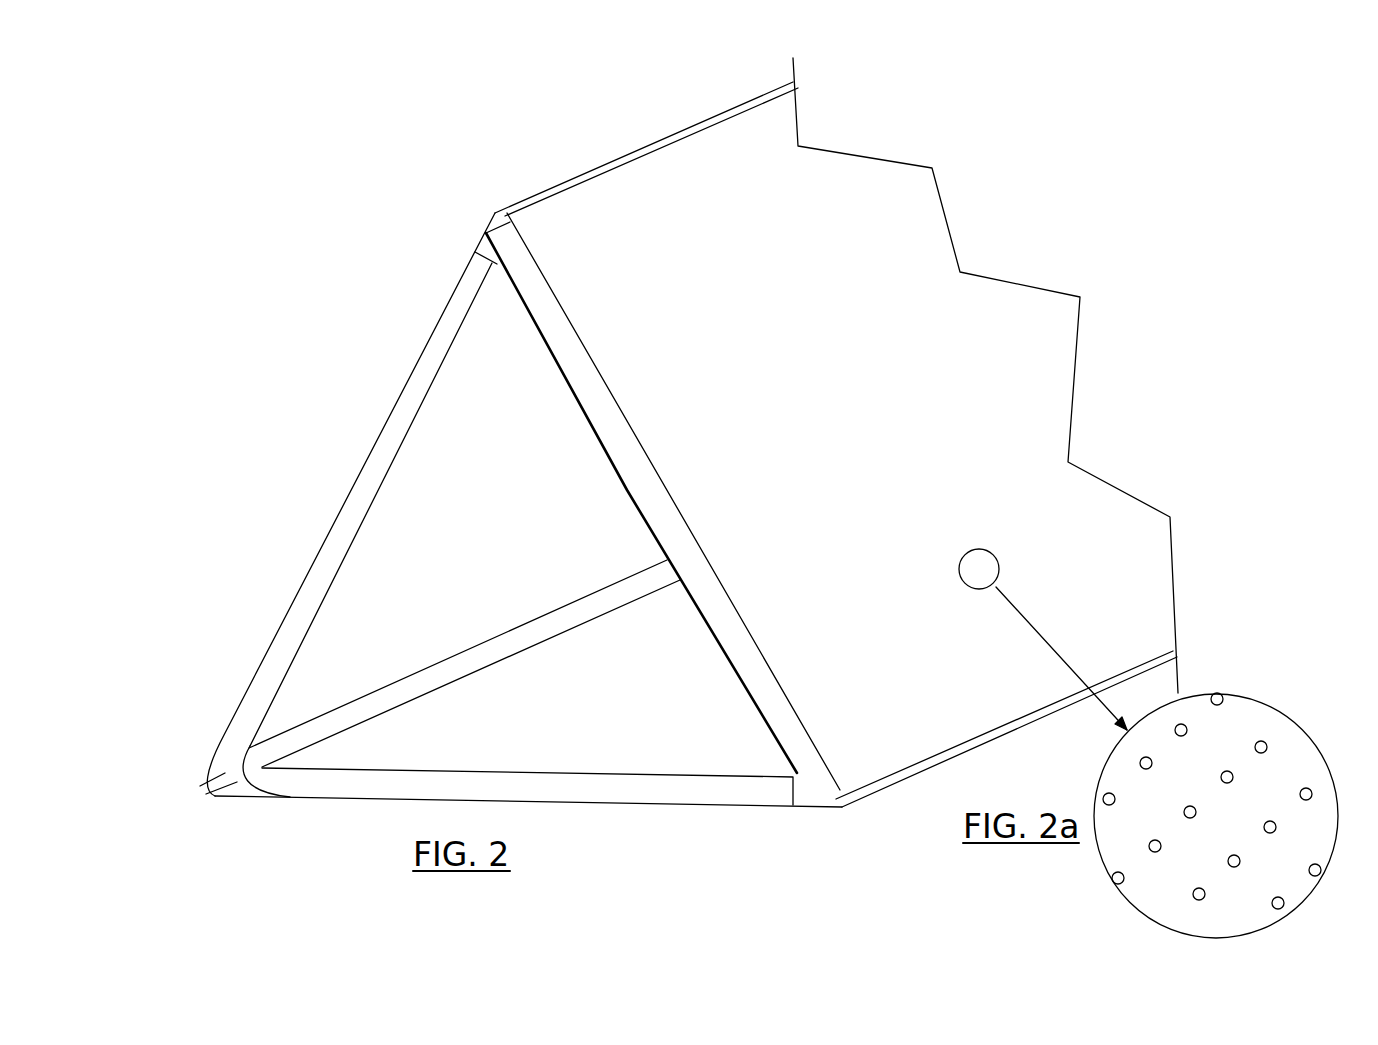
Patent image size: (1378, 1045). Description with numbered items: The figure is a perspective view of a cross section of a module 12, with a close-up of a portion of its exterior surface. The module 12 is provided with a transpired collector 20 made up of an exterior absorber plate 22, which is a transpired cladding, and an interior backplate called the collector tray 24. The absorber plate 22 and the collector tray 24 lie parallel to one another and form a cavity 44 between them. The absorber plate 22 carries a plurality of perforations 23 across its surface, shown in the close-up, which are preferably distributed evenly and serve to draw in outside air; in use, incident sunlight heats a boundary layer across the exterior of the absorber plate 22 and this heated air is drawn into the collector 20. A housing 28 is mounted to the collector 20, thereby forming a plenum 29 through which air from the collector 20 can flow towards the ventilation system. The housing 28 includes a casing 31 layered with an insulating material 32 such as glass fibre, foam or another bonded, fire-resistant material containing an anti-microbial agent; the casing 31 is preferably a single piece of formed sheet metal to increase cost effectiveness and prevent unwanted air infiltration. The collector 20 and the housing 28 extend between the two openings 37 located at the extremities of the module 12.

In FIG. 2, the module 12 is at (485, 147).
In FIG. 2, the transpired collector 20 is at (1031, 432).
In FIG. 2, the absorber plate 22 is at (868, 243).
In FIG. 2a, the absorber plate 22 is at (1185, 818).
In FIG. 2a, the perforations 23 is at (1150, 888).
In FIG. 2, the collector tray 24 is at (590, 378).
In FIG. 2, the housing 28 is at (466, 500).
In FIG. 2, the plenum 29 is at (522, 478).
In FIG. 2, the casing 31 is at (205, 767).
In FIG. 2, the insulating material 32 is at (320, 581).
In FIG. 2, the openings 37 is at (572, 508).
In FIG. 2, the cavity 44 is at (743, 657).